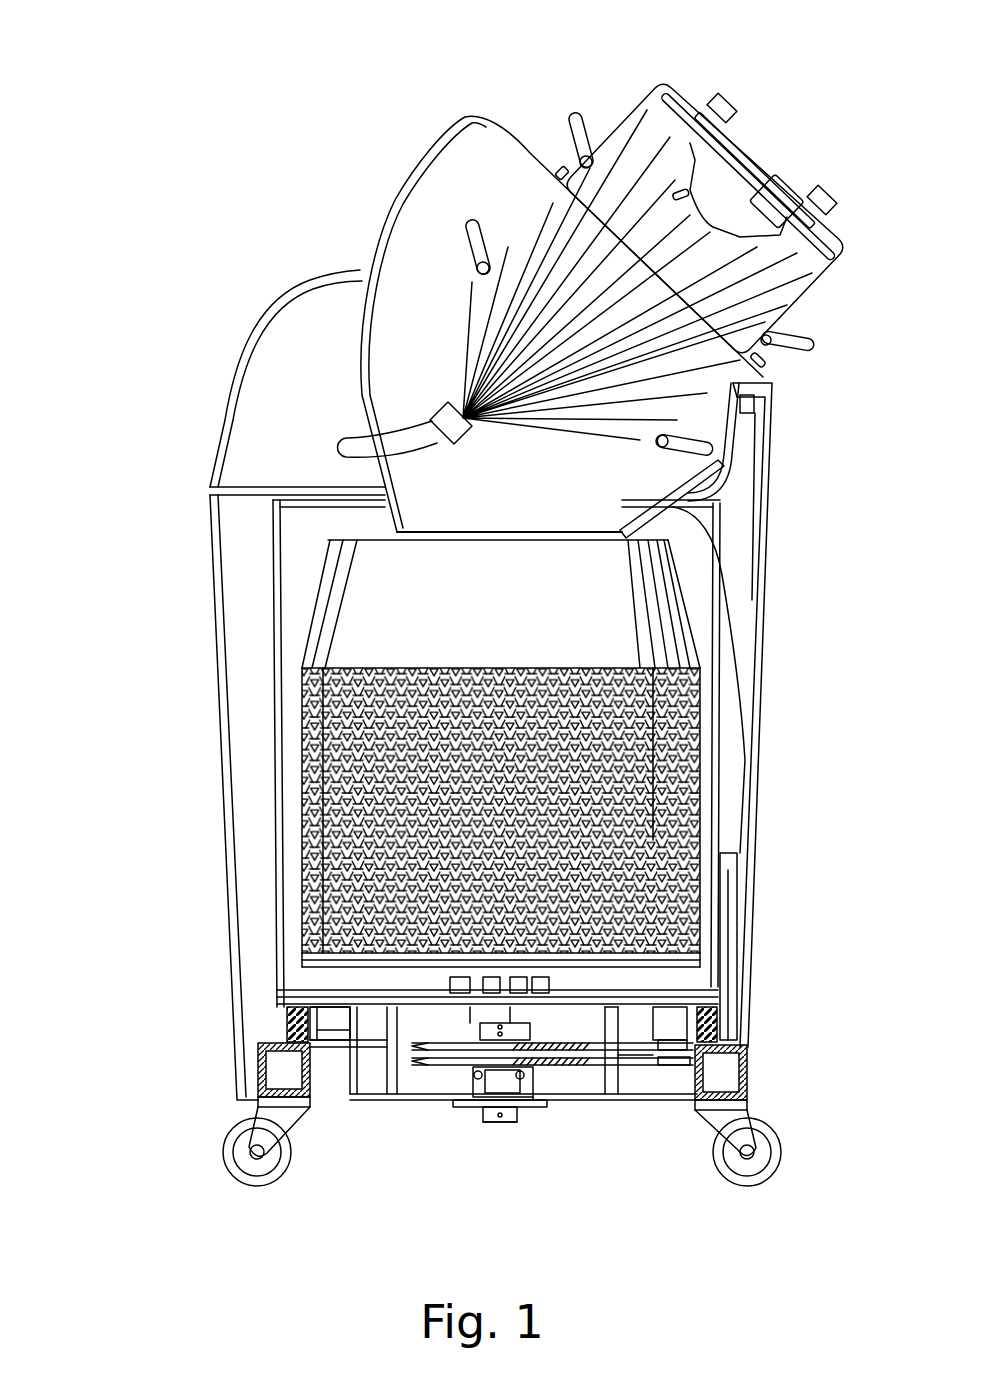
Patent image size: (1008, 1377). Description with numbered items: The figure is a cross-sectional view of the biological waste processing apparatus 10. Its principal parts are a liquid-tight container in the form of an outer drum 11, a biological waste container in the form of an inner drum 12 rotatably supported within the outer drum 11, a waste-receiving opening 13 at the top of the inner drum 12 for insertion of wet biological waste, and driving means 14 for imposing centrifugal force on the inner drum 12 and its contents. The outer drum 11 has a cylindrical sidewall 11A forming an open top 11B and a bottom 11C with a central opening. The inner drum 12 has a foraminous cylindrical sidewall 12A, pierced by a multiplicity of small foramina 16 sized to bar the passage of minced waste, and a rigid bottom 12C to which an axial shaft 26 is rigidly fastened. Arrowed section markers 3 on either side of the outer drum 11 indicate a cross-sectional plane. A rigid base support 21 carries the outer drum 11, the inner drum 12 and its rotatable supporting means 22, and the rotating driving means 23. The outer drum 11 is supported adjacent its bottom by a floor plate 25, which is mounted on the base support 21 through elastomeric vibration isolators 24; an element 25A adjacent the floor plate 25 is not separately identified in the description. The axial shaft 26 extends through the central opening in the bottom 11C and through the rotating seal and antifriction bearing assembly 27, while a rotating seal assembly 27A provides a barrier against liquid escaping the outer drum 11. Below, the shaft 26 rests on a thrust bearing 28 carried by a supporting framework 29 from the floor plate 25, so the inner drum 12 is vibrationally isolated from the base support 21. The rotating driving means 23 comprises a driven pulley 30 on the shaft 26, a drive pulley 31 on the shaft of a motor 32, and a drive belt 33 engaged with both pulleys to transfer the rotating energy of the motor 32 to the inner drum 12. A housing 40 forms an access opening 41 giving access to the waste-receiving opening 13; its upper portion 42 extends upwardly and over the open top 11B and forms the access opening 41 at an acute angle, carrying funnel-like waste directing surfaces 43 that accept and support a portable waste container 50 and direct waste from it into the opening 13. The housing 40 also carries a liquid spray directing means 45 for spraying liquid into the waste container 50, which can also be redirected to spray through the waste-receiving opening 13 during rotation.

The apparatus 10 is at (225, 75).
The liquid-tight container 11 is at (723, 682).
The cylindrical sidewall 11A is at (712, 728).
The open top 11B is at (306, 520).
The bottom 11C is at (370, 997).
The biological waste container 12 is at (290, 822).
The foraminous cylindrical sidewall 12A is at (315, 880).
The rigid bottom 12C is at (662, 973).
The waste-receiving opening 13 is at (355, 528).
The driving means 14 is at (405, 1195).
The small foramina 16 is at (520, 680).
The base support 21 is at (257, 1077).
The rotatable supporting means 22 is at (540, 1115).
The rotating driving means 23 is at (740, 893).
The elastomeric vibration isolators 24 is at (287, 1015).
The floor plate 25 is at (274, 1006).
The support block top 25A is at (332, 1011).
The axial shaft 26 is at (483, 1108).
The antifriction bearing 27 is at (477, 1015).
The rotating seal assembly 27A is at (712, 988).
The thrust bearing 28 is at (495, 1147).
The supporting framework 29 is at (610, 1083).
The driven pulley 30 is at (574, 1067).
The drive pulley 31 is at (667, 1067).
The motor 32 is at (735, 853).
The drive belt 33 is at (628, 1055).
The housing 40 is at (192, 415).
The access opening 41 is at (518, 118).
The upper portion 42 is at (257, 345).
The funnel-like waste directing surfaces 43 is at (347, 436).
The liquid directing means 45 is at (433, 402).
The portable waste container 50 is at (795, 165).
The section line 3- 3 is at (182, 487).